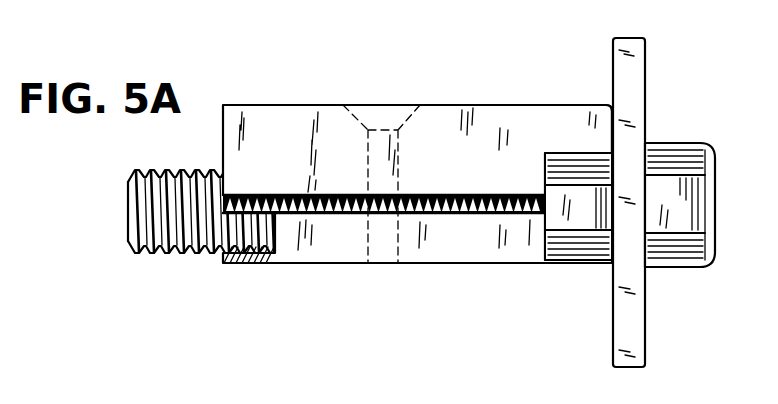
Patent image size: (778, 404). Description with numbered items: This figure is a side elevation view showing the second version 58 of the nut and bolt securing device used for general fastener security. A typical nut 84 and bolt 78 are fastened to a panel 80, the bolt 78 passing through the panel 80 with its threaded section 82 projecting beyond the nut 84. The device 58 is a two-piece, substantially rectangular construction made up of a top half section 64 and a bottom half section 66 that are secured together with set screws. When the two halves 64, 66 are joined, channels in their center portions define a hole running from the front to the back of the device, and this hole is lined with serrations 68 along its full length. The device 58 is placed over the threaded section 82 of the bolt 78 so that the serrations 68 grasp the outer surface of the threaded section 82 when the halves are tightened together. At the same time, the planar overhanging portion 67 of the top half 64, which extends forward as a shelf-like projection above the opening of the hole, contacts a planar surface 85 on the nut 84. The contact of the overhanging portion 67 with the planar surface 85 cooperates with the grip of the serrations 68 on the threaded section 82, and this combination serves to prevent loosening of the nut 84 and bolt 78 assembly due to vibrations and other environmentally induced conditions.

The second version of the nut and bolt securing device 58 is at (447, 195).
The top half section 64 is at (270, 113).
The bottom half section 66 is at (483, 255).
The planar overhanging projection 67 is at (588, 115).
The serrations 68 is at (218, 262).
The bolt 78 is at (702, 208).
The panel 80 is at (645, 66).
The threaded section of the bolt 82 is at (176, 255).
The nut 84 is at (593, 262).
The planar surface on the nut 85 is at (570, 152).